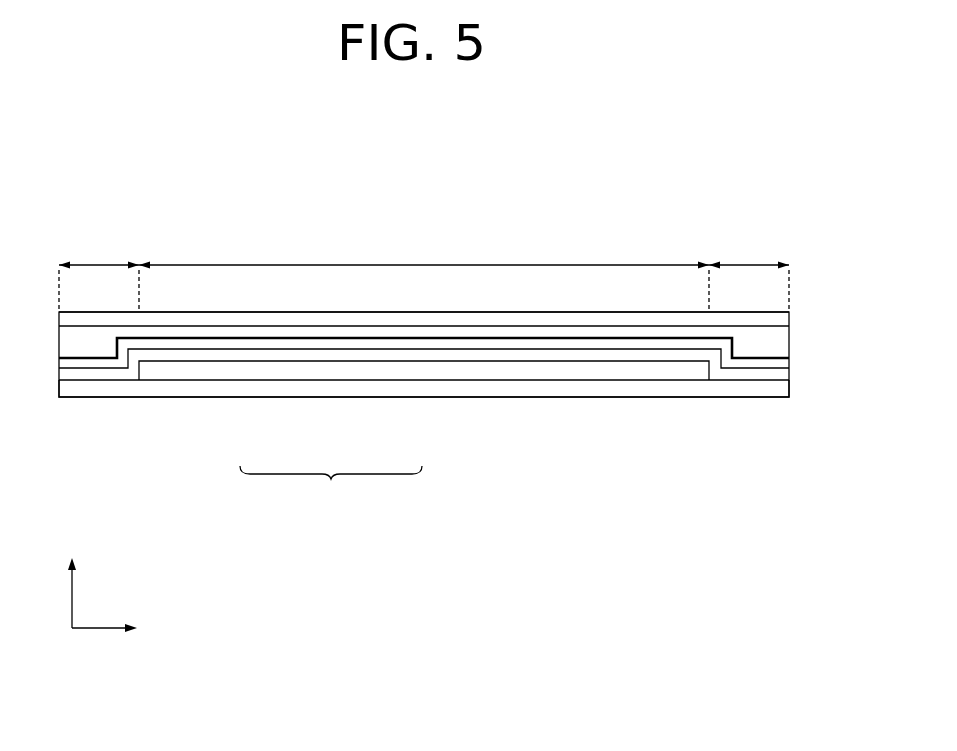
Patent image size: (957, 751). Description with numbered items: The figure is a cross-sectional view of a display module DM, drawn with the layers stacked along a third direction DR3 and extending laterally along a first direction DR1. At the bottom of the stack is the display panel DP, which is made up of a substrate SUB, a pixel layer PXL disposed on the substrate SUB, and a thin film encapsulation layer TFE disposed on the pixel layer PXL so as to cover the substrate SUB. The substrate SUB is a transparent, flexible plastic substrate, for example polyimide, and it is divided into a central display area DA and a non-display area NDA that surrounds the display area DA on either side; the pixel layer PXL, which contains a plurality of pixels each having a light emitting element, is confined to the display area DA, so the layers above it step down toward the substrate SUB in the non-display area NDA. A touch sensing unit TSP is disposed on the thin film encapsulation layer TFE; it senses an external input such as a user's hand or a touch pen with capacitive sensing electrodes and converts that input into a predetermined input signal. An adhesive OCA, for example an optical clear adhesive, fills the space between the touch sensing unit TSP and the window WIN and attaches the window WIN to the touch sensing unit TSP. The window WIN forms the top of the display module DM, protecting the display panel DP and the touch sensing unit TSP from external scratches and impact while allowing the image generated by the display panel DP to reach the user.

The display module DM is at (688, 198).
The window WIN is at (535, 320).
The adhesive OCA is at (776, 338).
The touch sensing unit TSP is at (467, 342).
The thin film encapsulation layer TFE is at (398, 355).
The pixel layer PXL is at (330, 372).
The substrate SUB is at (262, 388).
The display panel DP is at (331, 487).
The non-display area NDA is at (424, 275).
The display area DA is at (424, 253).
The third direction DR3 is at (77, 581).
The first direction DR1 is at (127, 629).